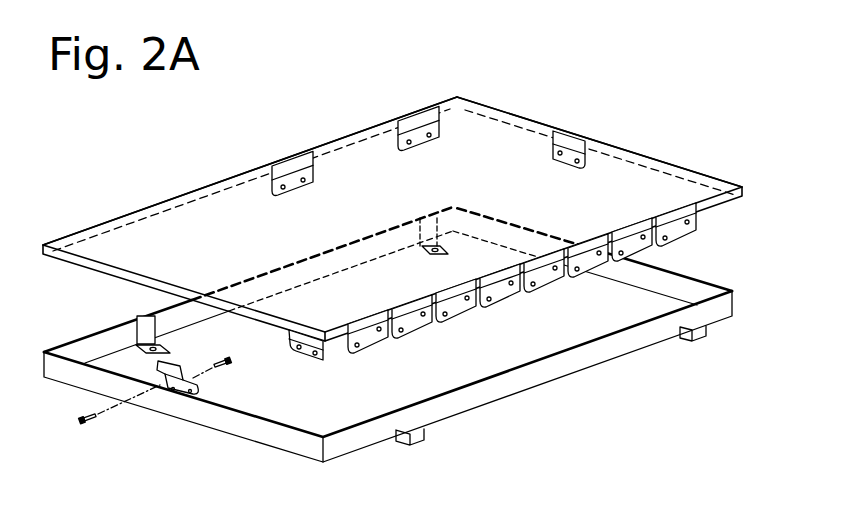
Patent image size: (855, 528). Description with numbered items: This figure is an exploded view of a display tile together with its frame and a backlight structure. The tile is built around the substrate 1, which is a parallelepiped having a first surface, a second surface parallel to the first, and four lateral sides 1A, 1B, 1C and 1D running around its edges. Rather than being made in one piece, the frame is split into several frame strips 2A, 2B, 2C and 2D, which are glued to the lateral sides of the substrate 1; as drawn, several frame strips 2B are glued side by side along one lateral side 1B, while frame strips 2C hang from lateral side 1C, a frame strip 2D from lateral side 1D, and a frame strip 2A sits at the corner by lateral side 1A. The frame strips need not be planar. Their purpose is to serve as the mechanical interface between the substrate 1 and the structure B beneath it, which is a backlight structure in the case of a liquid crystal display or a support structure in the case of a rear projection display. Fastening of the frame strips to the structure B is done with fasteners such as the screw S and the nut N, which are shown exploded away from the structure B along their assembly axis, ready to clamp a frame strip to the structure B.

The substrate 1 is at (650, 196).
The lateral side 1A is at (97, 269).
The lateral side 1B is at (735, 198).
The lateral side 1C is at (149, 204).
The lateral side 1D is at (677, 154).
The frame strip 2A is at (289, 345).
The frame strip 2B is at (705, 231).
The frame strip 2C is at (366, 128).
The frame strip 2D is at (581, 124).
The backlight structure B is at (620, 347).
The nut N is at (224, 380).
The screw S is at (89, 432).